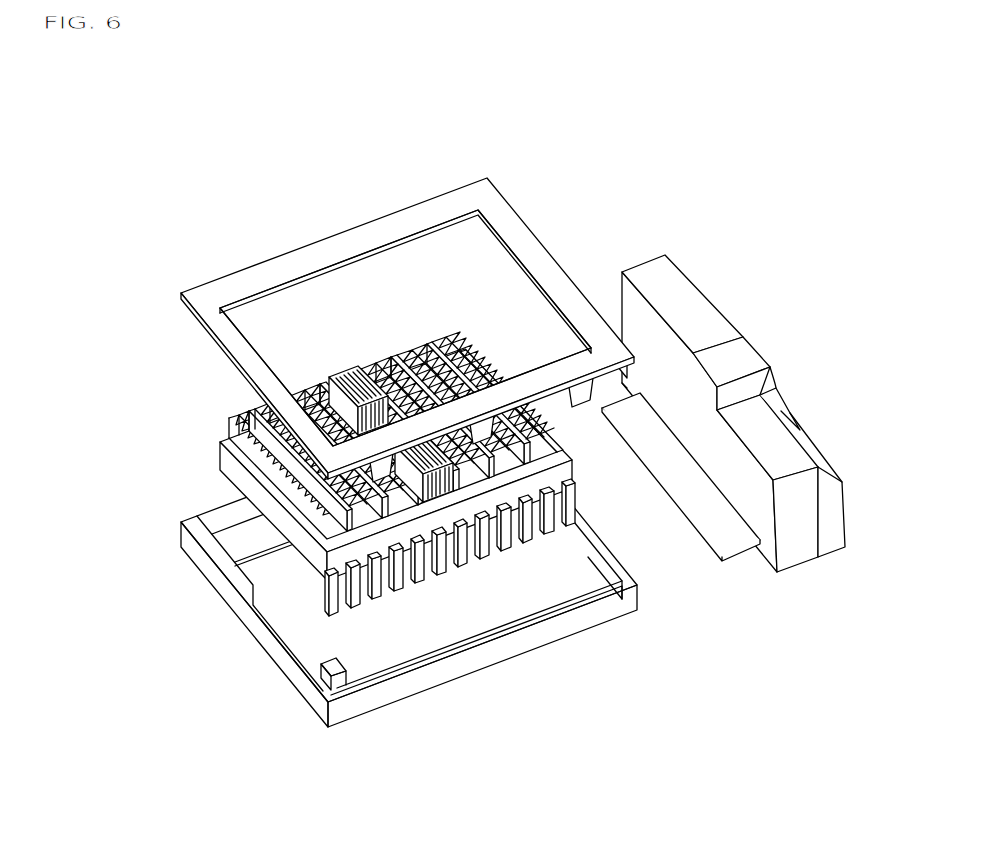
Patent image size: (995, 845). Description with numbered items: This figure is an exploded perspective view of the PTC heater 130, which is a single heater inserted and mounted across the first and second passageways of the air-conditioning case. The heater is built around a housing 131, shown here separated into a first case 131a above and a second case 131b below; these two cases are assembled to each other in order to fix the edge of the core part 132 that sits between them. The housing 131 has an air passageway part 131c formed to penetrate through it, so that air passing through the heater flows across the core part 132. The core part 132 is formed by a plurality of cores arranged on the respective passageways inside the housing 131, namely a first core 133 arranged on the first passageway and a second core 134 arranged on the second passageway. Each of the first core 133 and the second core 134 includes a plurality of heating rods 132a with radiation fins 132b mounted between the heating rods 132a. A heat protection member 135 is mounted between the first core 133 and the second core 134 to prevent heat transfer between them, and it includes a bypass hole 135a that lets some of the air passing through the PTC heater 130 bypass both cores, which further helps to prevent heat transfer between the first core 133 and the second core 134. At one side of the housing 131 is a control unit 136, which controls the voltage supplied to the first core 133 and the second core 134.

The PTC heater 130 is at (321, 178).
The housing 131 is at (118, 378).
The first case 131a is at (237, 353).
The second case 131b is at (187, 543).
The air passageway part 131c is at (266, 304).
The core part 132 is at (557, 738).
The heating rods 132a is at (478, 364).
The radiation fins 132b is at (458, 352).
The first core 133 is at (411, 595).
The second core 134 is at (518, 550).
The heat protection member 135 is at (352, 392).
The bypass hole 135a is at (344, 396).
The control unit 136 is at (719, 306).